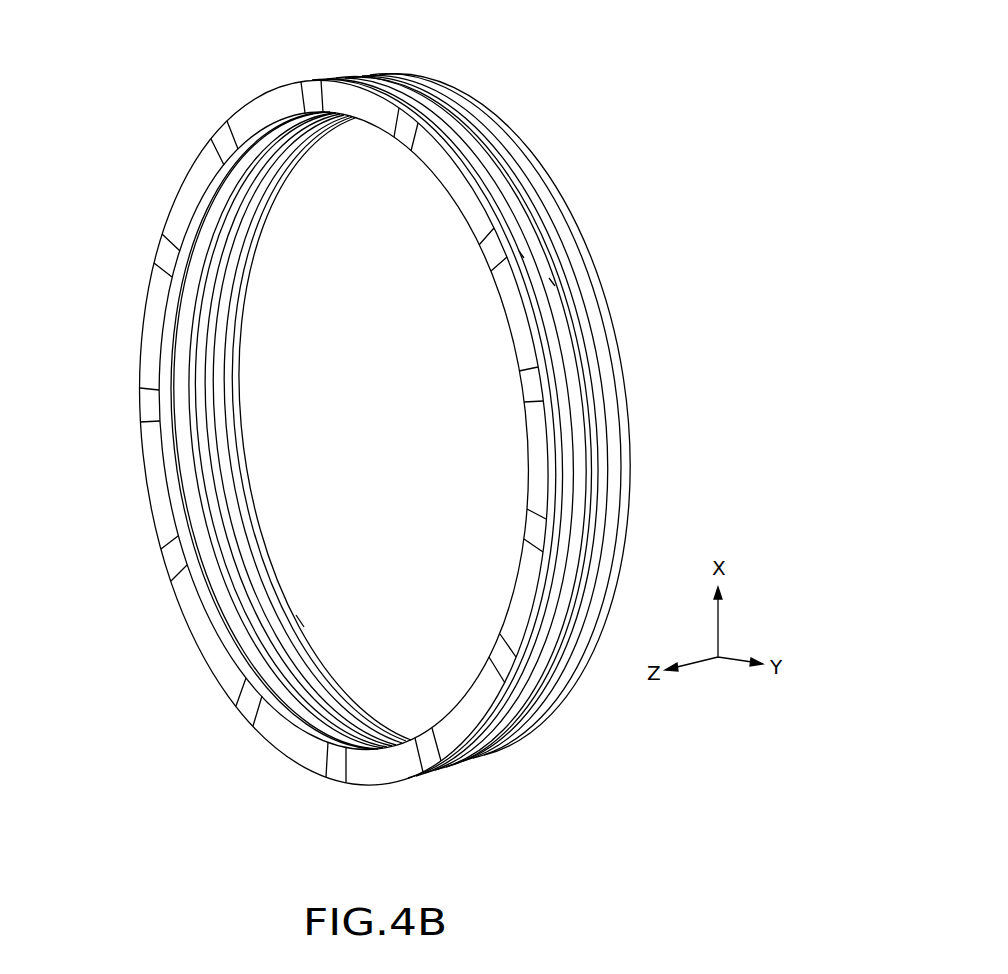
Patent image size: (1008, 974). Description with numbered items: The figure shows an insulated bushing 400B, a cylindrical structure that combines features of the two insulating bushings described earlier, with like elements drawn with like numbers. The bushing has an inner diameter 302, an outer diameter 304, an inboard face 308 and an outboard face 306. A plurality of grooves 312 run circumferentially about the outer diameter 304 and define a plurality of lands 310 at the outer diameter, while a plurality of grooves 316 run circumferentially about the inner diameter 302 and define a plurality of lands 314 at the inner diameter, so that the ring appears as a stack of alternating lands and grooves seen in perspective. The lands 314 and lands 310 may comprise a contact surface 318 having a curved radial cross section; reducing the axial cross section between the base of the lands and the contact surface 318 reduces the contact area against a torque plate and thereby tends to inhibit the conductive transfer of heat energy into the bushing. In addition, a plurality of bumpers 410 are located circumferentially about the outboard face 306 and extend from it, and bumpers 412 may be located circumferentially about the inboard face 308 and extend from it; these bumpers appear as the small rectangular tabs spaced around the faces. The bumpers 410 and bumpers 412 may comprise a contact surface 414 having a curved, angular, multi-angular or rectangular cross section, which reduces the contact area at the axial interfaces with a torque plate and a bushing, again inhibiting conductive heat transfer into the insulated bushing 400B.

The insulated bushing 400B is at (368, 409).
The inner diameter 302 is at (399, 170).
The outer diameter 304 is at (470, 95).
The outboard face 306 is at (247, 446).
The inboard face 308 is at (138, 370).
The lands 310 is at (534, 182).
The grooves 312 is at (523, 256).
The lands 314 is at (242, 308).
The grooves 316 is at (227, 384).
The contact surface 318 is at (595, 360).
The bumpers 410 is at (163, 551).
The bumpers 412 is at (301, 622).
The contact surface 414 is at (237, 694).